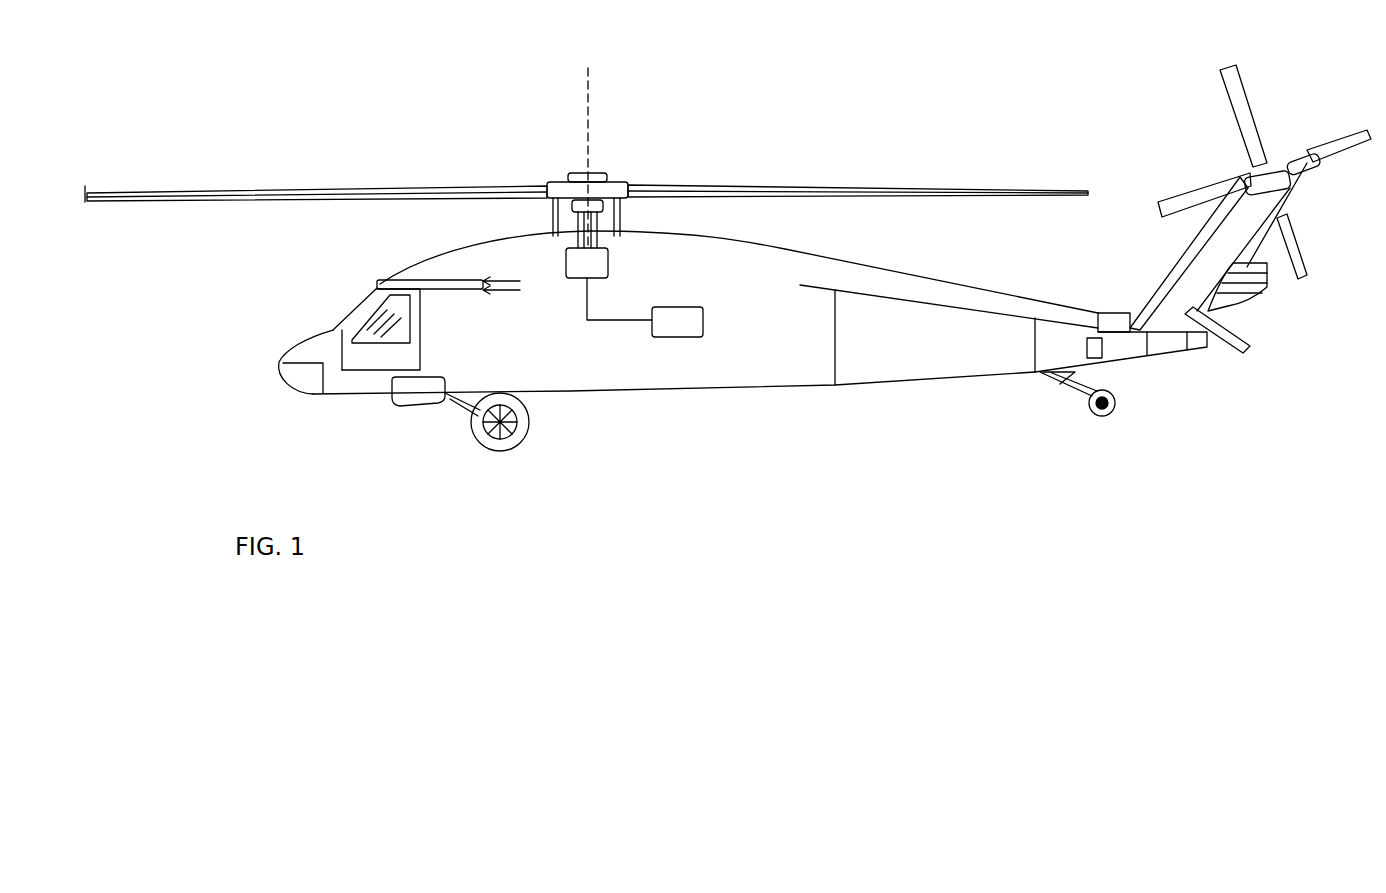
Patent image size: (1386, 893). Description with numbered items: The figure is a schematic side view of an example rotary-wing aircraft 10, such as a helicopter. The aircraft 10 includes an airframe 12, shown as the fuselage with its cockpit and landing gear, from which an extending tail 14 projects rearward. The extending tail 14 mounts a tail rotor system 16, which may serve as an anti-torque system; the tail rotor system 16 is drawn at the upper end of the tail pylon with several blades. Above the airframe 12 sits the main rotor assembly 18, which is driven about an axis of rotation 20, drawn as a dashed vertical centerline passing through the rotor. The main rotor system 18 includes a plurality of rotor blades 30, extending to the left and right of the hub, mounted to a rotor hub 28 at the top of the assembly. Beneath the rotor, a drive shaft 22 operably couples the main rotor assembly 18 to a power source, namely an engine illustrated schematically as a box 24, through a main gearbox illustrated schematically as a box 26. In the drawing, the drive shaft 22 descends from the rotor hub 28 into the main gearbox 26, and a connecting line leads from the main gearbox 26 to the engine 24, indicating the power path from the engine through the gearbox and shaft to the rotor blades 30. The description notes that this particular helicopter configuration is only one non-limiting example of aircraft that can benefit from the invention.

The rotary-wing aircraft 10 is at (106, 132).
The airframe 12 is at (610, 373).
The extending tail 14 is at (998, 360).
The tail rotor system 16 is at (1297, 243).
The main rotor assembly 18 is at (560, 182).
The axis of rotation 20 is at (592, 125).
The drive shaft 22 is at (597, 233).
The engine 24 is at (688, 307).
The main gearbox 26 is at (612, 257).
The rotor hub 28 is at (595, 176).
The rotor blades 30 is at (373, 187).